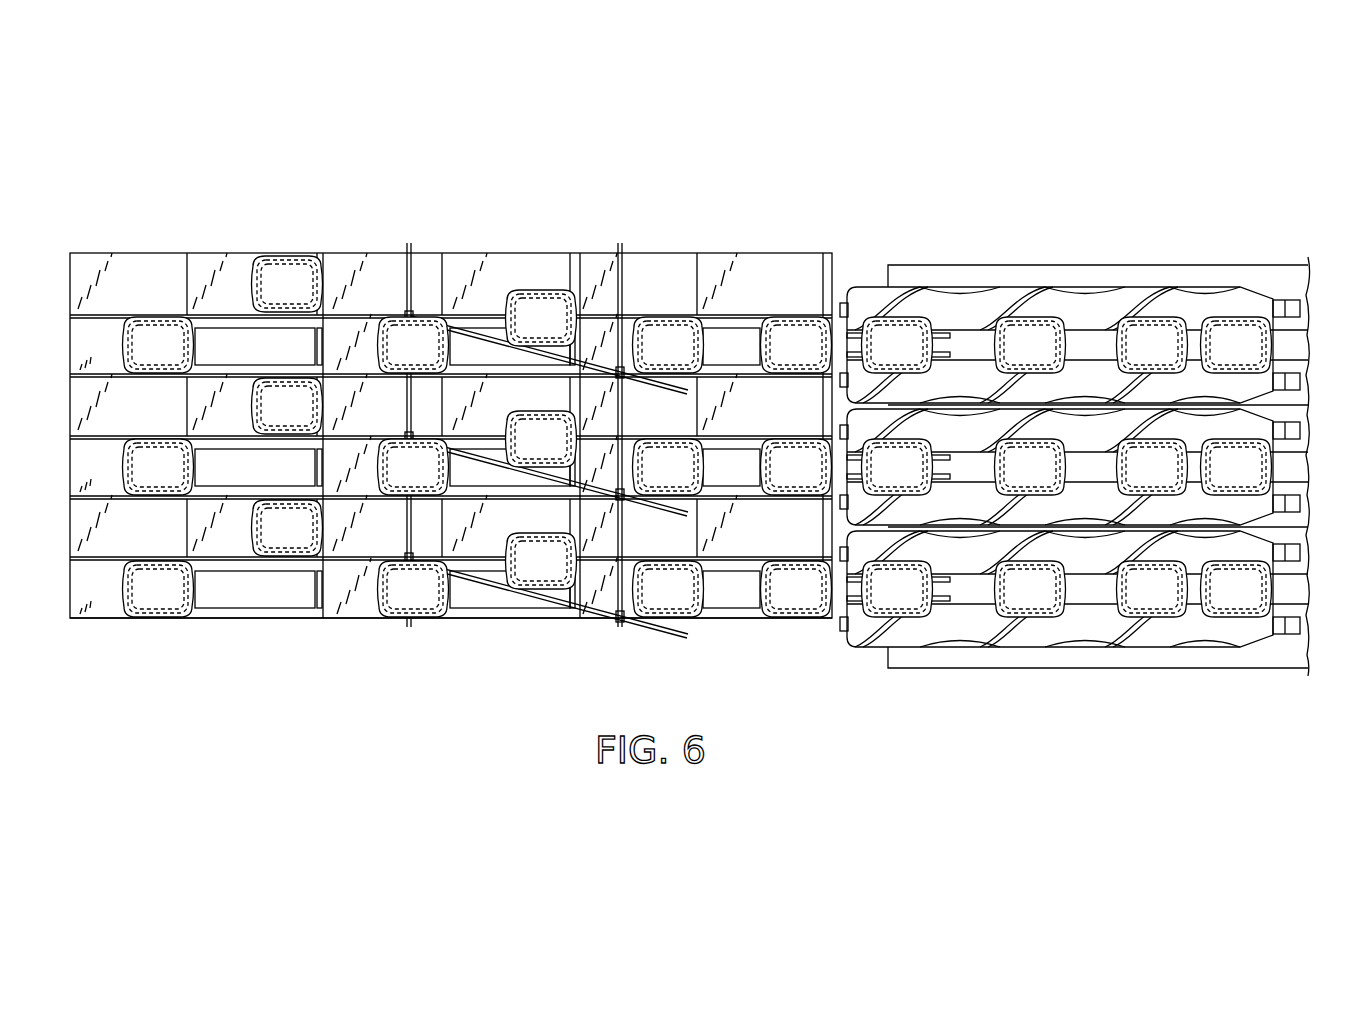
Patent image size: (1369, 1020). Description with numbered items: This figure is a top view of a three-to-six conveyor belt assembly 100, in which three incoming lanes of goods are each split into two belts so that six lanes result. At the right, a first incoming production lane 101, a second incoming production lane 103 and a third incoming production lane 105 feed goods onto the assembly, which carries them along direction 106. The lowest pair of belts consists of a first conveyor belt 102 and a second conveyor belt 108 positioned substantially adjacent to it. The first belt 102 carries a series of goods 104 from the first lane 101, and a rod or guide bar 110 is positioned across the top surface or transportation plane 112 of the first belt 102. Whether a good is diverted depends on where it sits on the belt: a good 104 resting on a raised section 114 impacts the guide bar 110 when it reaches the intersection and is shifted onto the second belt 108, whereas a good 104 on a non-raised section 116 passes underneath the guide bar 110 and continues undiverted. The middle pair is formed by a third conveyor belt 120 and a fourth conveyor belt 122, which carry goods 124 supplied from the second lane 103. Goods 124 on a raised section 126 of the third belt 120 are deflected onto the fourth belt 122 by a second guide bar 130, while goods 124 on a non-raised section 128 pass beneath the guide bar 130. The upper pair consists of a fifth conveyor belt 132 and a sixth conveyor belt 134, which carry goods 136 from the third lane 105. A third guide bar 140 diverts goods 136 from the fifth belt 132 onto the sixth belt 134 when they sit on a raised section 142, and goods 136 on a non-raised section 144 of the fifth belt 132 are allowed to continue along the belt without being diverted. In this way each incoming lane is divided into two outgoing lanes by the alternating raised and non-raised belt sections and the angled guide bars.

The conveyor belt assembly 100 is at (398, 190).
The direction 106 is at (745, 222).
The sixth conveyor belt 134 is at (70, 280).
The fifth conveyor belt 132 is at (70, 343).
The fourth conveyor belt 122 is at (70, 405).
The third conveyor belt 120 is at (70, 466).
The second conveyor belt 108 is at (70, 526).
The first conveyor belt 102 is at (70, 588).
The non-raised section 144 is at (112, 359).
The raised section 142 is at (270, 359).
The goods 136 is at (305, 297).
The goods 124 is at (305, 419).
The non-raised section 128 is at (112, 477).
The raised section 126 is at (270, 477).
The transportation plane 112 is at (112, 600).
The goods 104 is at (177, 601).
The raised section 114 is at (270, 600).
The non-raised section 116 is at (362, 605).
The third guide bar 140 is at (475, 330).
The second guide bar 130 is at (475, 452).
The guide bar 110 is at (497, 600).
The third incoming production lane 105 is at (1313, 344).
The second incoming production lane 103 is at (1313, 466).
The first incoming production lane 101 is at (1313, 586).